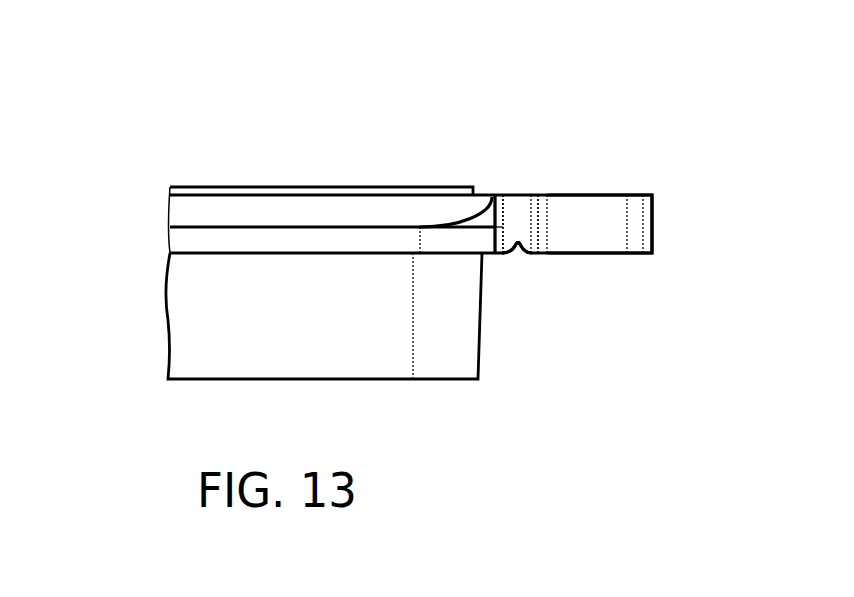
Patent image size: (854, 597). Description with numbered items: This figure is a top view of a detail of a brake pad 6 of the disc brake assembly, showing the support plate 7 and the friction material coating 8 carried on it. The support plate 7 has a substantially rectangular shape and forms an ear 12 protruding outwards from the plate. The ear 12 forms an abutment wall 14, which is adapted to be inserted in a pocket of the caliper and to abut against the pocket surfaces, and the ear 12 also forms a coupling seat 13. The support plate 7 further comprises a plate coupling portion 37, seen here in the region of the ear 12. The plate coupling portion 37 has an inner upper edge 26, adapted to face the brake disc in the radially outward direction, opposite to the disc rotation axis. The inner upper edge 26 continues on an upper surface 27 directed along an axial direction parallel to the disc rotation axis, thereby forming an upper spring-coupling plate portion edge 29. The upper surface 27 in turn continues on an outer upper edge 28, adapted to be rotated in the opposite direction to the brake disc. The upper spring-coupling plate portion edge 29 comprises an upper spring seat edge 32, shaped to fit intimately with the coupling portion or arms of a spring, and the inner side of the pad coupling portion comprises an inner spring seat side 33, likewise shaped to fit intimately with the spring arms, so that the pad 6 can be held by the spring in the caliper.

The pad 6 is at (566, 108).
The support plate 7 is at (190, 239).
The friction material coating 8 is at (232, 338).
The ear 12 is at (592, 208).
The coupling seat 13 is at (501, 169).
The abutment wall 14 is at (652, 229).
The inner upper edge 26 is at (523, 243).
The upper surface 27 is at (462, 226).
The outer upper edge 28 is at (507, 211).
The upper spring-coupling plate portion edge 29 is at (531, 218).
The upper spring seat edge 32 is at (495, 198).
The inner spring seat side 33 is at (516, 243).
The plate coupling portion 37 is at (500, 229).